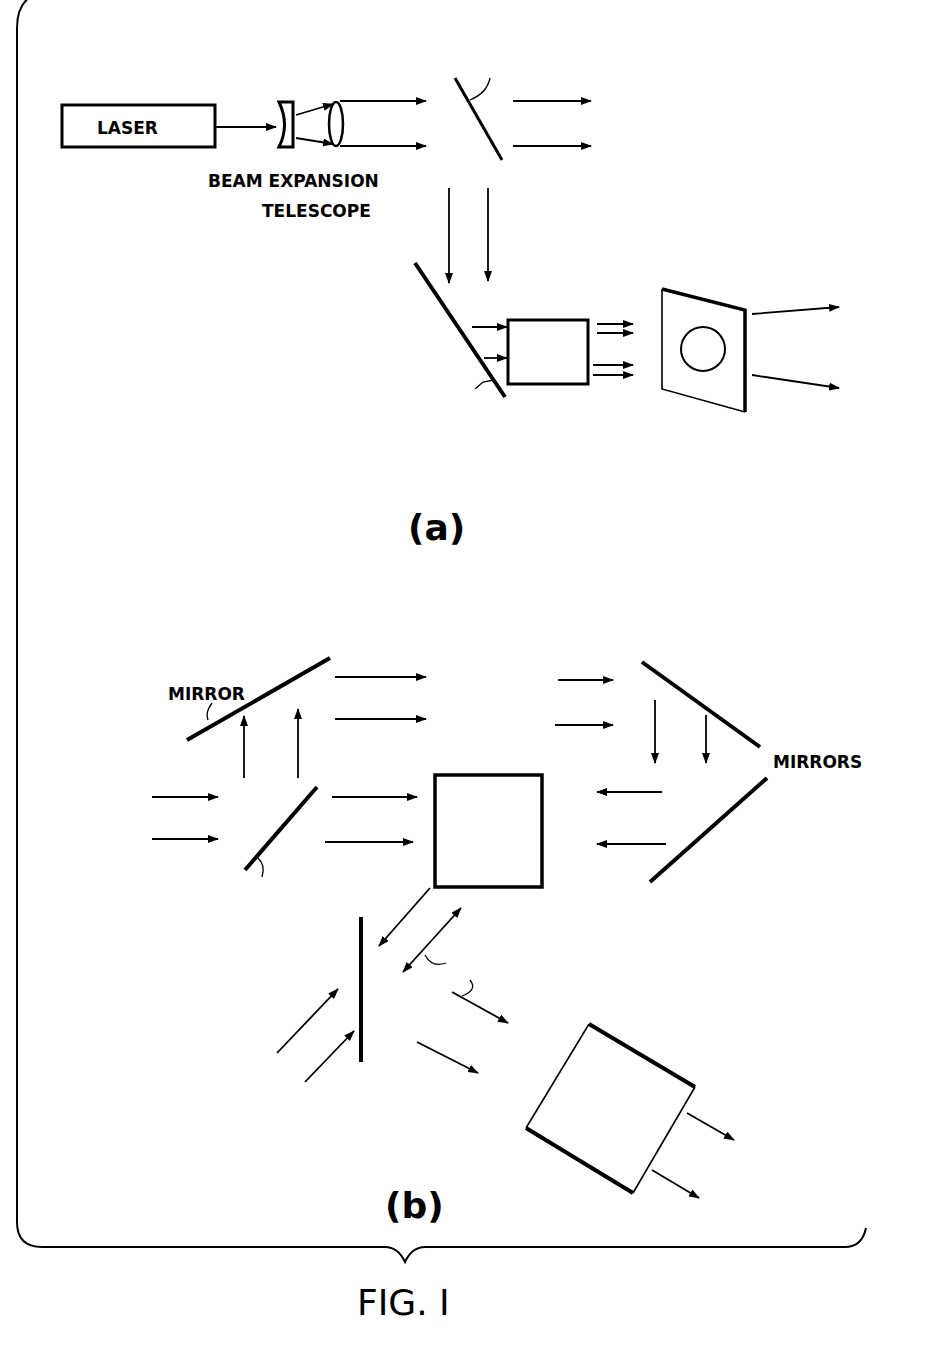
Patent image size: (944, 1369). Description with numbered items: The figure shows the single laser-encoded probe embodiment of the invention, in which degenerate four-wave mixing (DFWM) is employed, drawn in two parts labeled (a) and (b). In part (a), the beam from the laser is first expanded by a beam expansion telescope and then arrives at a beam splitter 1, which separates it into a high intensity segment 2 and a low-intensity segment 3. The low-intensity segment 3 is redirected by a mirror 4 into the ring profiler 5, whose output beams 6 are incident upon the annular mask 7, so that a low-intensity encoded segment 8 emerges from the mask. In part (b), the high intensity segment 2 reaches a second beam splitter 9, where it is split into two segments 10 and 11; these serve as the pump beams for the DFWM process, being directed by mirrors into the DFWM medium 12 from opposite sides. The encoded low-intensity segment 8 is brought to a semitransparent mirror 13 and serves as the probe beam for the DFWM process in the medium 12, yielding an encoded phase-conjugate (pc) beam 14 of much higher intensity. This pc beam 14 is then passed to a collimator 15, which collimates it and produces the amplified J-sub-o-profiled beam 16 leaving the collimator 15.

The beam splitter 1 is at (498, 158).
The high intensity segment 2 is at (557, 148).
The low-intensity segment 3 is at (489, 232).
The mirror 4 is at (449, 345).
The ring profiler 5 is at (548, 385).
The low intensity leg output beams 6 is at (608, 378).
The annular mask 7 is at (705, 293).
The low-intensity encoded segment 8 is at (806, 309).
The beam splitter 9 is at (262, 870).
The pump beam segment 10 is at (355, 845).
The pump beam segment 11 is at (300, 752).
The DFWM medium 12 is at (515, 889).
The semitransparent mirror 13 is at (413, 1030).
The encoded pc beam 14 is at (480, 980).
The collimator 15 is at (596, 1178).
The amplified J_o-profiled beam 16 is at (751, 1166).